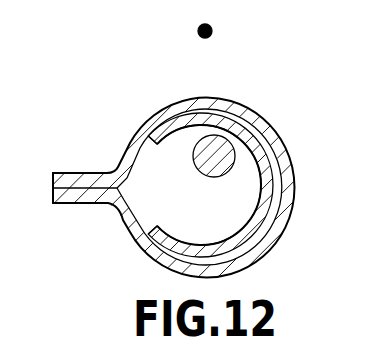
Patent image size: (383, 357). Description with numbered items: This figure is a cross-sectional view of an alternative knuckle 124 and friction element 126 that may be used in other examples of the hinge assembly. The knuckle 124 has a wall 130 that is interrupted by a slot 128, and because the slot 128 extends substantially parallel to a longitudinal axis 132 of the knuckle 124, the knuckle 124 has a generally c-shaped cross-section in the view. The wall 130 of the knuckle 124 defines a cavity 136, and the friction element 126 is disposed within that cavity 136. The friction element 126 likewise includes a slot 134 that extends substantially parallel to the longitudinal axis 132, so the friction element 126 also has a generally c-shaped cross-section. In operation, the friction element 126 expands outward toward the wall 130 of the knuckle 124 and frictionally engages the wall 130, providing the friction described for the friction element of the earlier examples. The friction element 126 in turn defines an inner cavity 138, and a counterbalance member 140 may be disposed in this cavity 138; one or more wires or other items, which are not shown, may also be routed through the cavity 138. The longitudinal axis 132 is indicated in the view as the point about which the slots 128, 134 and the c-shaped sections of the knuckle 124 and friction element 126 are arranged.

The knuckle 124 is at (287, 145).
The friction element 126 is at (261, 242).
The slot 128 is at (118, 187).
The wall 130 is at (140, 210).
The longitudinal axis 132 is at (213, 31).
The slot 134 is at (140, 227).
The cavity 136 is at (157, 167).
The cavity 138 is at (243, 196).
The counterbalance member 140 is at (195, 140).